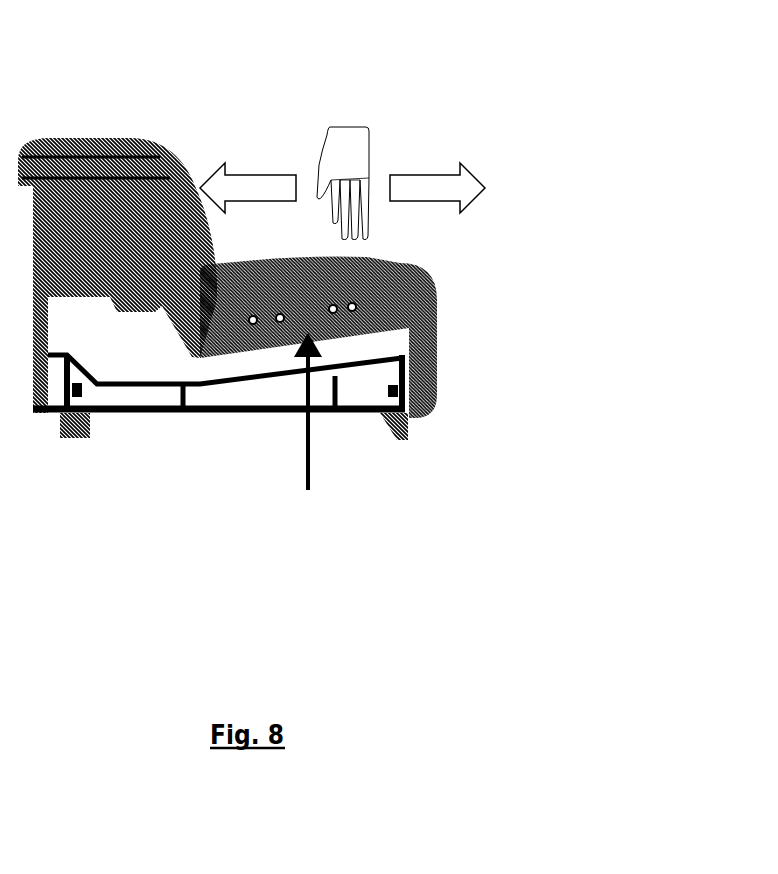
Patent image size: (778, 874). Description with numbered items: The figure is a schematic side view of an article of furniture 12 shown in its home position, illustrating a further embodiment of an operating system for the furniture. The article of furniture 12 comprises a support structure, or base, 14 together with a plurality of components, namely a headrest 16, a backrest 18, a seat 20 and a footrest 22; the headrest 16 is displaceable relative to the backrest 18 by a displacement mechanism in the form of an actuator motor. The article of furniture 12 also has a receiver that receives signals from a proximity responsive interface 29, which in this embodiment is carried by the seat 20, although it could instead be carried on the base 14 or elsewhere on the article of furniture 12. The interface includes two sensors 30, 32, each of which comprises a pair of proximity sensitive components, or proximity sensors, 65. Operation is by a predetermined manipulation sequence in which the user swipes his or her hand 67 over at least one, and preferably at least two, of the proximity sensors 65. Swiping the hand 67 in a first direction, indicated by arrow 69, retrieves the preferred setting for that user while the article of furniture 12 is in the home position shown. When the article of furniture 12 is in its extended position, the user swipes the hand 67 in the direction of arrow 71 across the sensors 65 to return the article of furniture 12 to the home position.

The article of furniture 12 is at (357, 273).
The support structure 14 is at (370, 411).
The headrest 16 is at (98, 137).
The backrest 18 is at (210, 236).
The seat 20 is at (403, 263).
The footrest 22 is at (440, 345).
The proximity responsive interface 29 is at (311, 434).
The sensor 30 is at (272, 300).
The sensor 32 is at (348, 290).
The proximity sensors 65 is at (253, 325).
The hand 67 is at (348, 125).
The arrow 69 is at (423, 175).
The arrow 71 is at (267, 180).